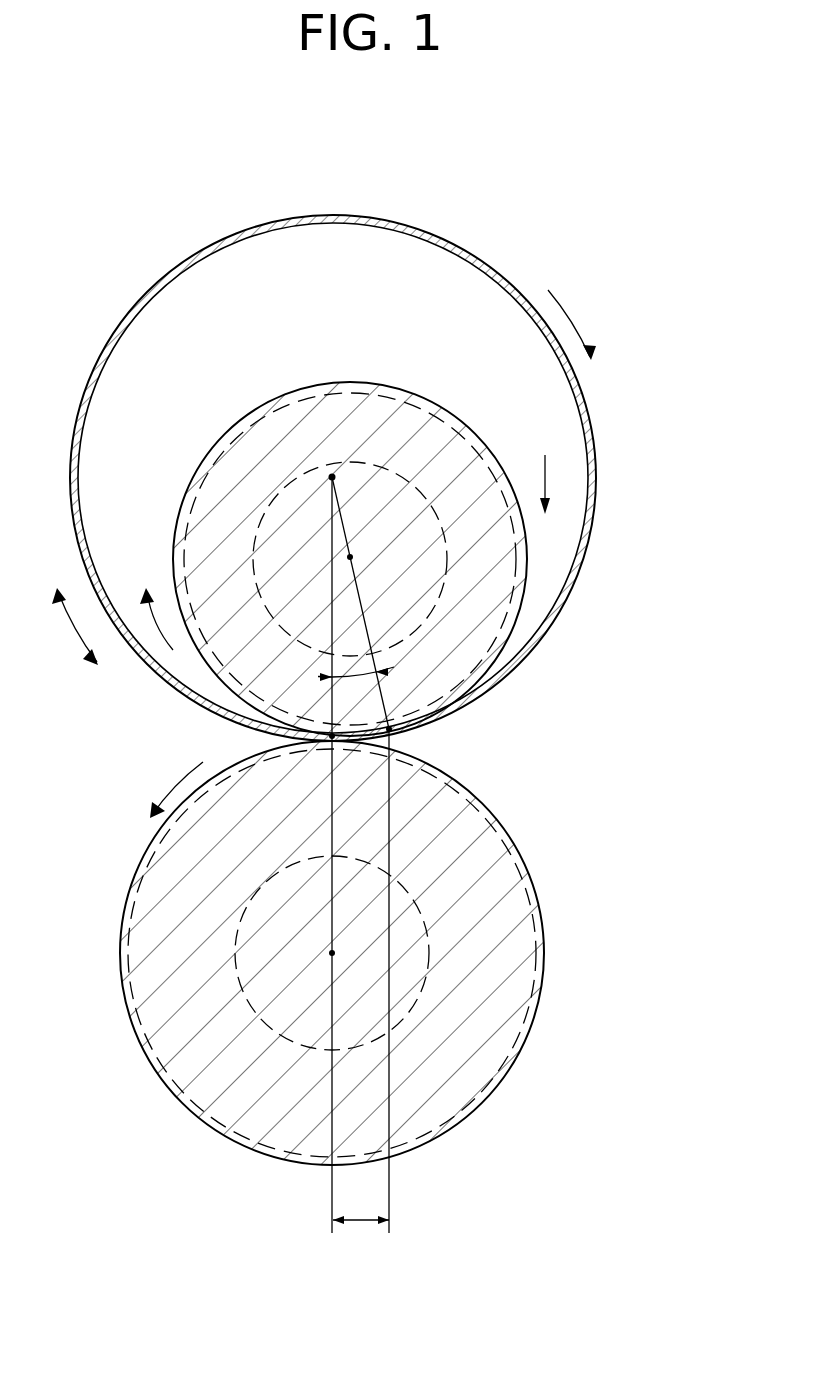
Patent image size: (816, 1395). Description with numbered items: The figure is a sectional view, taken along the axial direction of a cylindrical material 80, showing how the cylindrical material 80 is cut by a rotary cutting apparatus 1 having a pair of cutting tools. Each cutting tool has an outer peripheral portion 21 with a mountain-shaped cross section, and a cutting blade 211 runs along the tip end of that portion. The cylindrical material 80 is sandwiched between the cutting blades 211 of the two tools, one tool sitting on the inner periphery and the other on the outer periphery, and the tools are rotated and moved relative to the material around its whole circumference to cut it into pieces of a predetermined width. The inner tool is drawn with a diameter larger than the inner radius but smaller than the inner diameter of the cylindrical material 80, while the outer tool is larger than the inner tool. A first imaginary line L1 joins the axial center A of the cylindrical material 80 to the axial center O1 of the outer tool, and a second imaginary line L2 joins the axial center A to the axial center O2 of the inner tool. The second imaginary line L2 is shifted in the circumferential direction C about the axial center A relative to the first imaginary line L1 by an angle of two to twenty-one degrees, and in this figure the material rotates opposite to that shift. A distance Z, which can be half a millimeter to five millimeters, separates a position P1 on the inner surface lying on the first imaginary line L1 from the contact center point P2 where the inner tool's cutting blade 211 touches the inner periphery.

The cylindrical material 80 is at (360, 220).
The outer peripheral portion 21 is at (540, 908).
The cutting blade 211 is at (483, 1110).
The axial center of the cylindrical material A is at (332, 477).
The axial center of the outer peripheral-side cutting tool O1 is at (332, 953).
The axial center of the inner peripheral-side cutting tool O2 is at (350, 557).
The first imaginary line L1 is at (334, 836).
The second imaginary line L2 is at (361, 603).
The position on the inner peripheral surface P1 is at (330, 738).
The contact center point P2 is at (392, 730).
The distance Z is at (361, 981).
The circumferential direction C is at (72, 626).
The rotary cutting apparatus 1 is at (130, 790).